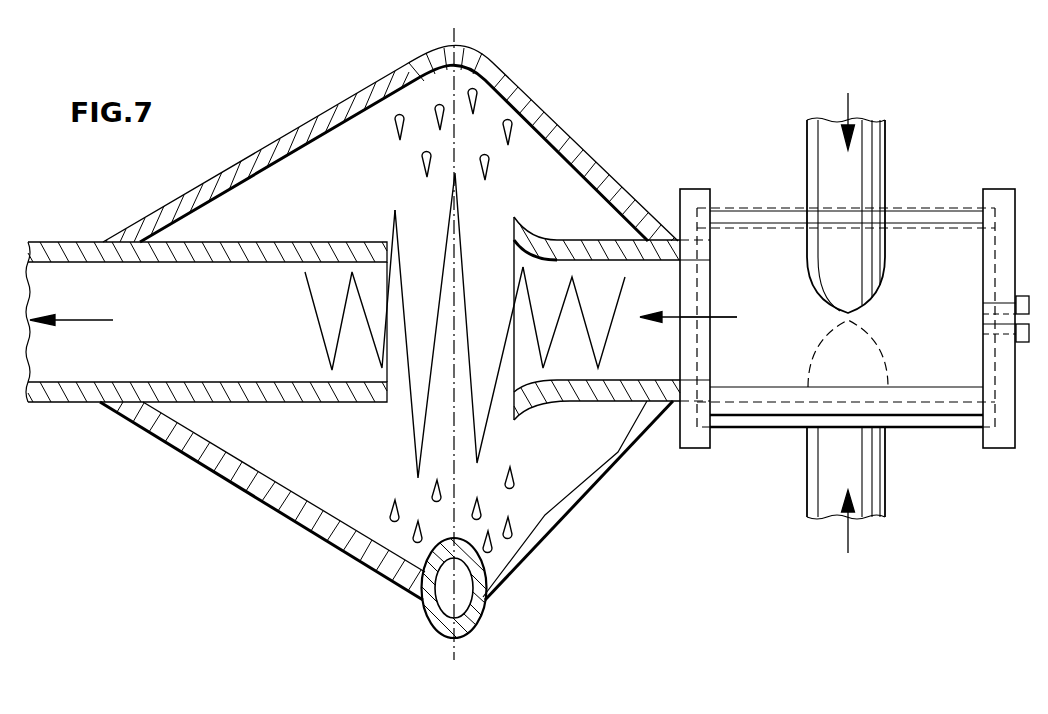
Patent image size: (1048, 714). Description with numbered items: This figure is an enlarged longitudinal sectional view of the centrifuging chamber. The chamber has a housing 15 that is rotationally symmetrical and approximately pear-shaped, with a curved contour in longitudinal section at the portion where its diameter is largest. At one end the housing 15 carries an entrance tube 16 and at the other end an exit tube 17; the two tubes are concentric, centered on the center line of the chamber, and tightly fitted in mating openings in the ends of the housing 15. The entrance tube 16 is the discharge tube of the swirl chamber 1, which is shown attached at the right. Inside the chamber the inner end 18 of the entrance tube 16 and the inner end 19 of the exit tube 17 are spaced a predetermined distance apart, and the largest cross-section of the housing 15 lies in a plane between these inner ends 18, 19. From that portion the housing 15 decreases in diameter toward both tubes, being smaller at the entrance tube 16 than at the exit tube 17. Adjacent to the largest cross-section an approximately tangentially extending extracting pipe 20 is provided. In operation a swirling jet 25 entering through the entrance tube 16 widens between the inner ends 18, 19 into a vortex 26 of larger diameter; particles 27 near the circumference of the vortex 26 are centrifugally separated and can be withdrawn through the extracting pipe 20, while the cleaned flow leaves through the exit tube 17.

The swirl chamber 1 is at (944, 172).
The housing 15 is at (567, 124).
The entrance tube 16 is at (616, 250).
The exit tube 17 is at (217, 250).
The inner end of entrance tube 18 is at (514, 246).
The inner end of exit tube 19 is at (388, 392).
The extracting pipe 20 is at (483, 610).
The swirling jet 25 is at (580, 308).
The vortex 26 is at (443, 248).
The particles 27 is at (479, 97).